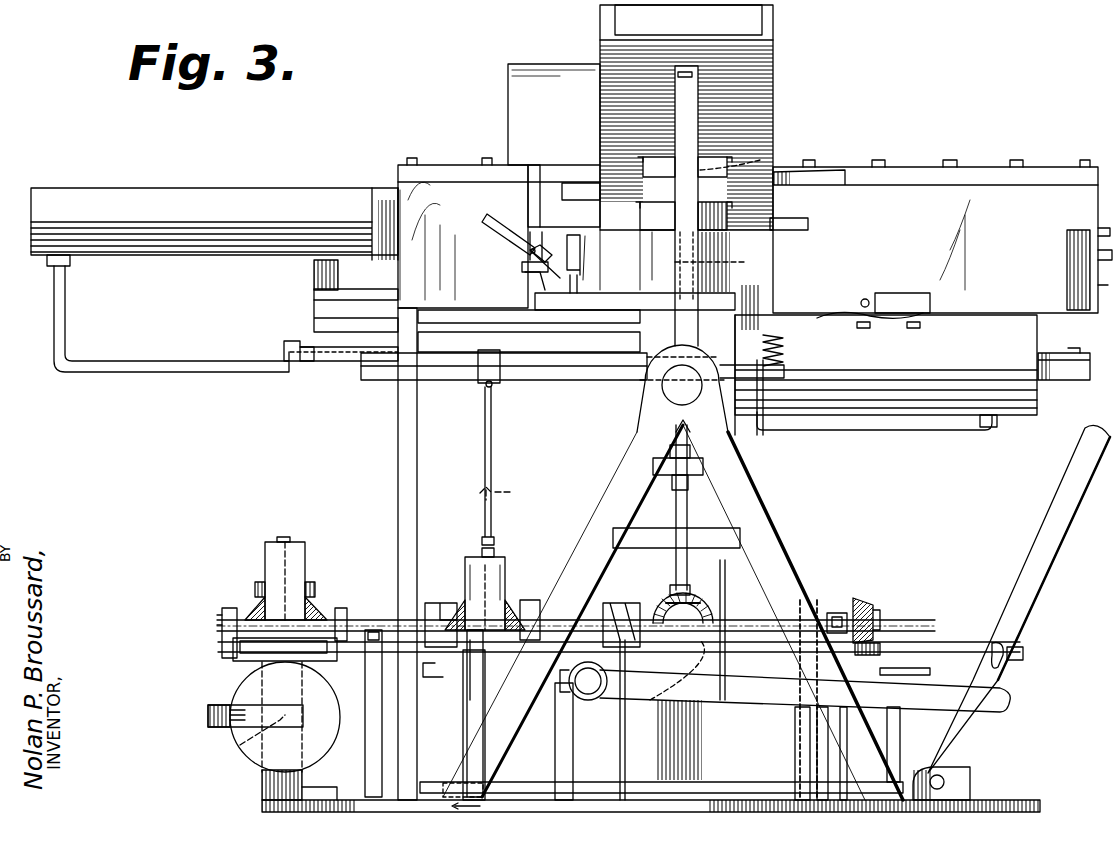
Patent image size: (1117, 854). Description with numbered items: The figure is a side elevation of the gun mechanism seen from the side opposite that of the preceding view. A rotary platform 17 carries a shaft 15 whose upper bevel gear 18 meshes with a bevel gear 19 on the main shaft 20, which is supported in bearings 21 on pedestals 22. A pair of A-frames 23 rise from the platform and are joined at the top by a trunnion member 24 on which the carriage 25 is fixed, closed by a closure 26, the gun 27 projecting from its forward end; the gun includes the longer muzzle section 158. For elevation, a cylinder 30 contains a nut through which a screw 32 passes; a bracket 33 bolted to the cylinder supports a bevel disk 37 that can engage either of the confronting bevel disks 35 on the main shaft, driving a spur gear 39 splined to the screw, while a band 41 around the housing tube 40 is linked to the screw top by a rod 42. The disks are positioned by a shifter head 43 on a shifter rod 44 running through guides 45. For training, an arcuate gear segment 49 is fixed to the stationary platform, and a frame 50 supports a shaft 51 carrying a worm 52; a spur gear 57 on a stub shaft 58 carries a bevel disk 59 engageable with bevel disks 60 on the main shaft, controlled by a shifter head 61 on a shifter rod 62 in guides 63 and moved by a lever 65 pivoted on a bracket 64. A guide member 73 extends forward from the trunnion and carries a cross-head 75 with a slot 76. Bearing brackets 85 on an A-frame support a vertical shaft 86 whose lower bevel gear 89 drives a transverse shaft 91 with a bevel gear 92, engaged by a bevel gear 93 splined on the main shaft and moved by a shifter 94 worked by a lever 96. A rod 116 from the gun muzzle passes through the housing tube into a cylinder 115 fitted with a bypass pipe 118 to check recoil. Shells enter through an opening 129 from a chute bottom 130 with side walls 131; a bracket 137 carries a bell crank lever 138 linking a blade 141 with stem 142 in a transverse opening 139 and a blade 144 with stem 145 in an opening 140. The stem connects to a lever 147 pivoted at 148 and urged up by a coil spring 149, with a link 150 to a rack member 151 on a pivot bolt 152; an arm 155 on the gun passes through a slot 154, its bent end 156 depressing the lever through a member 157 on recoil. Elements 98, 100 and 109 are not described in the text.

The shaft 15 is at (895, 740).
The rotary platform 17 is at (745, 790).
The bevel gear 18 is at (910, 690).
The bevel gear 19 is at (510, 494).
The main shaft 20 is at (366, 620).
The bearings 21 is at (835, 612).
The pedestals 22 is at (833, 733).
The A-frames 23 is at (768, 513).
The trunnion member 24 is at (682, 390).
The carriage 25 is at (452, 249).
The closure 26 is at (445, 165).
The gun 27 is at (155, 181).
The cylinder or housing 30 is at (463, 742).
The screw 32 is at (494, 556).
The bracket 33 is at (468, 718).
The bevel disks 35 is at (445, 603).
The bevel disk 37 is at (472, 580).
The spur gear 39 is at (505, 565).
The housing tube 40 is at (552, 366).
The band 41 is at (480, 370).
The rod 42 is at (484, 443).
The shifter head 43 is at (440, 678).
The shifter rod 44 is at (935, 668).
The guides 45 is at (800, 605).
The arcuate gear segment 49 is at (208, 708).
The frame 50 is at (300, 545).
The shaft 51 is at (240, 745).
The worm 52 is at (320, 735).
The spur gear 57 is at (258, 580).
The stub shaft 58 is at (282, 537).
The bevel disk 59 is at (315, 580).
The bevel disks 60 is at (248, 602).
The shifter head 61 is at (235, 632).
The shifter rod 62 is at (468, 680).
The guides 63 is at (368, 660).
The bracket 64 is at (970, 775).
The lever 65 is at (1030, 557).
The guide member 73 is at (290, 362).
The cross-head 75 is at (316, 271).
The slot 76 is at (350, 333).
The bearing brackets 85 is at (660, 456).
The vertical shaft 86 is at (676, 512).
The bevel gear 89 is at (690, 600).
The transverse shaft 91 is at (672, 700).
The bevel gear 92 is at (713, 598).
The bevel gear 93 is at (620, 592).
The shifter 94 is at (575, 695).
The lever 96 is at (790, 720).
The valve 98 is at (1098, 258).
The valve stem 100 is at (1098, 294).
The fitting 109 is at (1098, 226).
The cylinder 115 is at (920, 418).
The rod 116 is at (53, 311).
The bypass pipe 118 is at (960, 430).
The opening 129 is at (568, 165).
The chute bottom 130 is at (624, 236).
The side walls 131 is at (600, 30).
The bracket 137 is at (698, 243).
The bell crank lever 138 is at (700, 267).
The transverse opening 139 is at (727, 205).
The opening 140 is at (727, 160).
The blade 141 is at (648, 258).
The stem 142 is at (745, 263).
The blade 144 is at (640, 172).
The stem 145 is at (780, 158).
The lever 147 is at (600, 297).
The pivot 148 is at (863, 298).
The coil spring 149 is at (785, 348).
The link 150 is at (522, 266).
The rack member 151 is at (528, 191).
The pivot bolt 152 is at (528, 252).
The slot 154 is at (484, 216).
The arm 155 is at (545, 278).
The downwardly bent end 156 is at (575, 248).
The member 157 is at (530, 242).
The muzzle section 158 is at (260, 196).